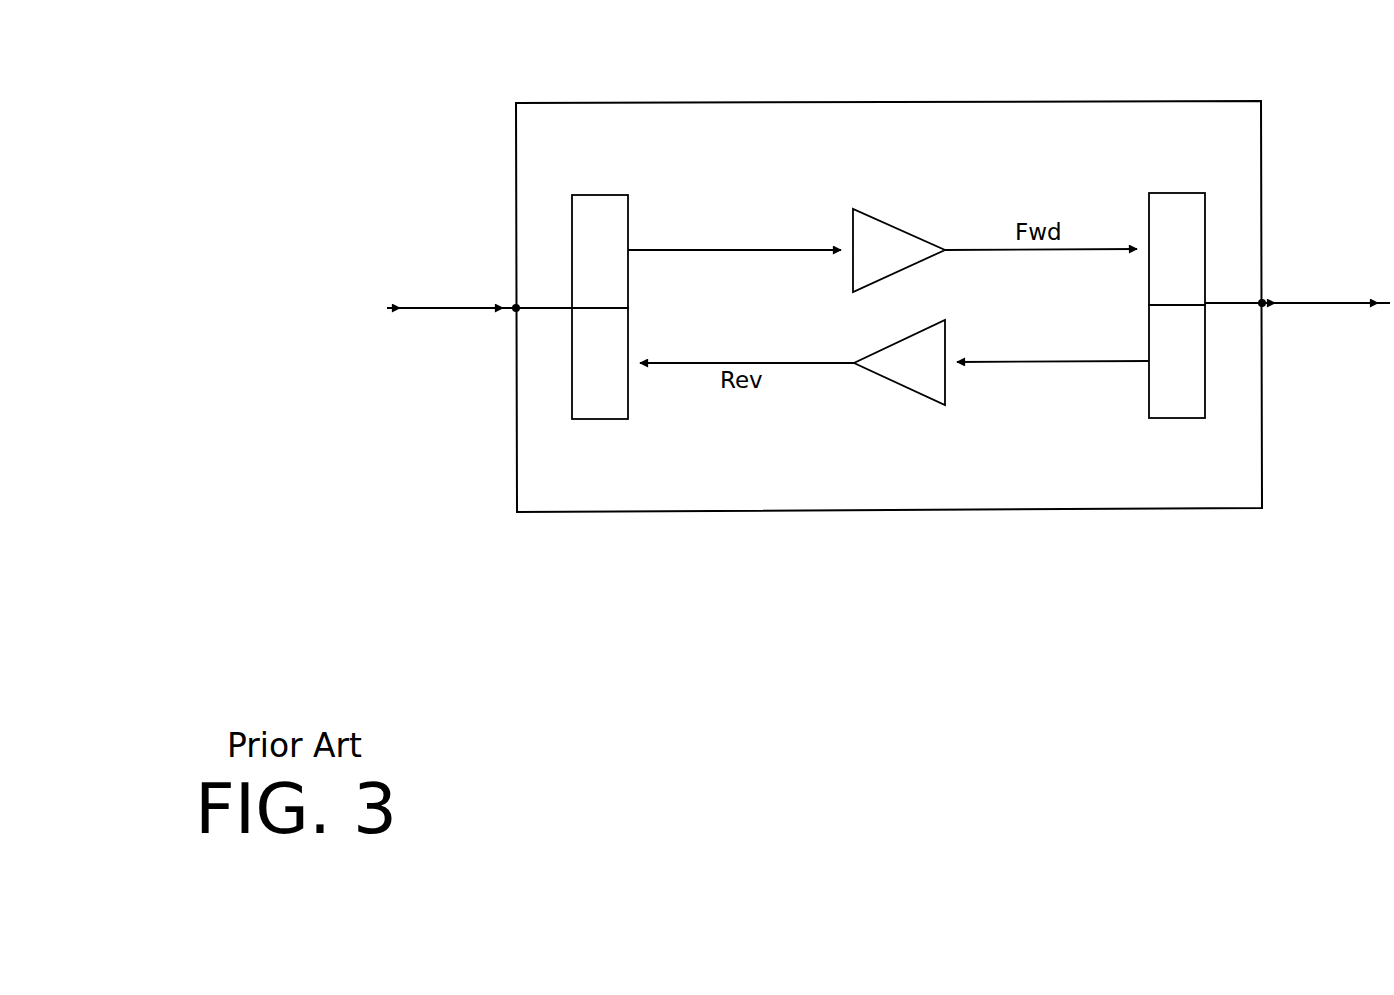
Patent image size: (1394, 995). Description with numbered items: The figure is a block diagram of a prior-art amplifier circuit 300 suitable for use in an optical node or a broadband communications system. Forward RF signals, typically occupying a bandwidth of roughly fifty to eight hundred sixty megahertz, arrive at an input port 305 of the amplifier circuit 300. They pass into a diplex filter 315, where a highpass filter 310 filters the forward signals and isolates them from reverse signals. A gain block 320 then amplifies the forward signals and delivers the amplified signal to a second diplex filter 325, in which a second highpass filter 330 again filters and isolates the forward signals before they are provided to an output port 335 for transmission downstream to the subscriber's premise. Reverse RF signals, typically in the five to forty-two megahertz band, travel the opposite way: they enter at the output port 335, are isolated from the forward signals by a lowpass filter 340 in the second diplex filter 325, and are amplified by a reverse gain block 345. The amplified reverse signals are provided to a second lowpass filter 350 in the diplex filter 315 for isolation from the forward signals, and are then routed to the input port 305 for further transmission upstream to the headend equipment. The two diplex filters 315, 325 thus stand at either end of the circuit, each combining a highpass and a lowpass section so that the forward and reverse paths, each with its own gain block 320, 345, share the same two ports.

The amplifier circuit 300 is at (922, 649).
The input port 305 is at (514, 304).
The highpass filter 310 is at (581, 221).
The diplex filter 315 is at (608, 225).
The gain block 320 is at (868, 215).
The second diplex filter 325 is at (1185, 224).
The second highpass filter 330 is at (1158, 221).
The output port 335 is at (1263, 300).
The lowpass filter 340 is at (1158, 411).
The reverse gain block 345 is at (928, 398).
The second lowpass filter 350 is at (581, 412).